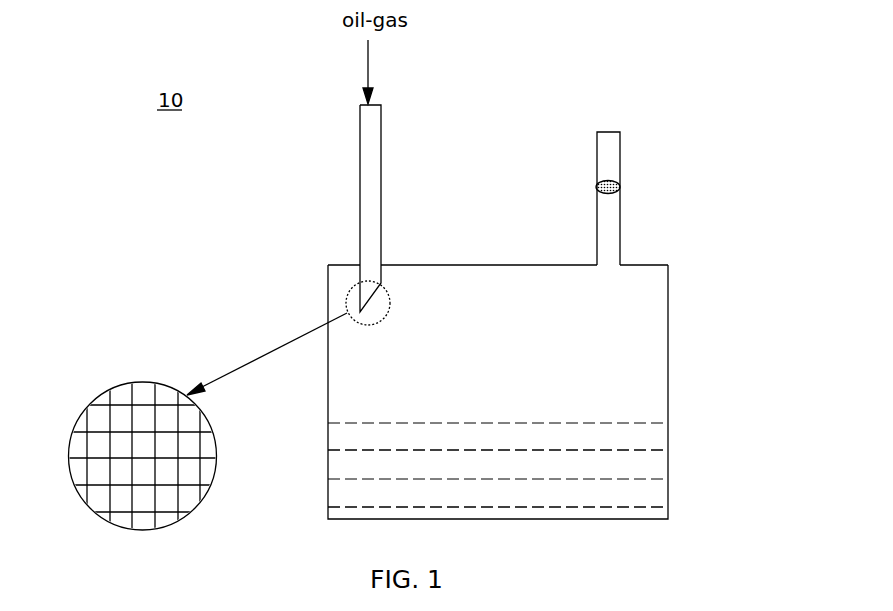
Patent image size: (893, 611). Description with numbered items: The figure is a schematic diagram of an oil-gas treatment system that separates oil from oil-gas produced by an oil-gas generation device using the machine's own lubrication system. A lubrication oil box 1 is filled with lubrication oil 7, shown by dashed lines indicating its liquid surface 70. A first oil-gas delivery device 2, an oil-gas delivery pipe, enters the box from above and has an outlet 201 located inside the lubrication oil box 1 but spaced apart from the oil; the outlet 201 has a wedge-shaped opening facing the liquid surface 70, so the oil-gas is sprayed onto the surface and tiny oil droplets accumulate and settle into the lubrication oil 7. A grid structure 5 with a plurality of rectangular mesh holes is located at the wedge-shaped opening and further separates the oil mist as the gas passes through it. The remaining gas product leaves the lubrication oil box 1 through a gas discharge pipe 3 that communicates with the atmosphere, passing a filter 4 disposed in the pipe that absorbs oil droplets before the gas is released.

The lubrication oil box 1 is at (650, 369).
The first oil-gas delivery device 2 is at (372, 163).
The outlet 201 is at (362, 295).
The gas discharge pipe 3 is at (614, 220).
The filter 4 is at (620, 188).
The grid structure 5 is at (132, 432).
The lubrication oil 7 is at (603, 449).
The liquid surface 70 is at (603, 422).